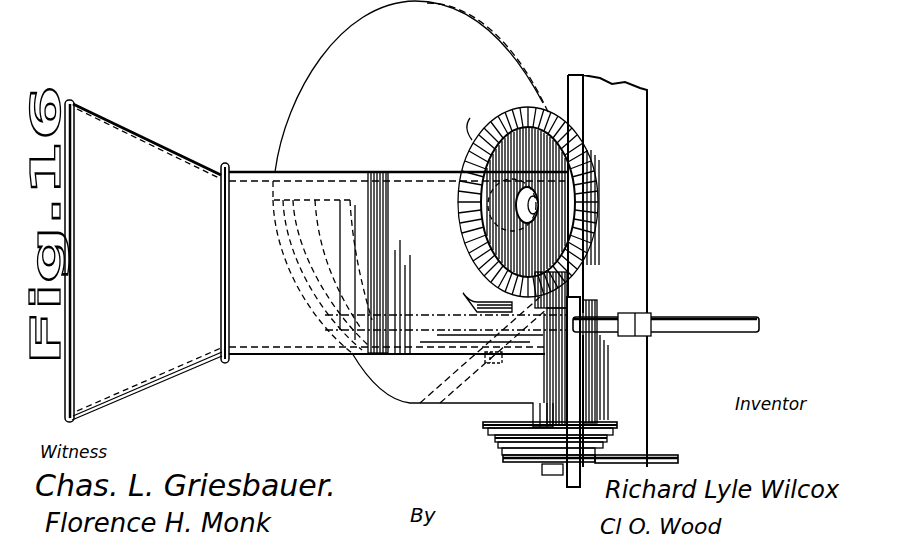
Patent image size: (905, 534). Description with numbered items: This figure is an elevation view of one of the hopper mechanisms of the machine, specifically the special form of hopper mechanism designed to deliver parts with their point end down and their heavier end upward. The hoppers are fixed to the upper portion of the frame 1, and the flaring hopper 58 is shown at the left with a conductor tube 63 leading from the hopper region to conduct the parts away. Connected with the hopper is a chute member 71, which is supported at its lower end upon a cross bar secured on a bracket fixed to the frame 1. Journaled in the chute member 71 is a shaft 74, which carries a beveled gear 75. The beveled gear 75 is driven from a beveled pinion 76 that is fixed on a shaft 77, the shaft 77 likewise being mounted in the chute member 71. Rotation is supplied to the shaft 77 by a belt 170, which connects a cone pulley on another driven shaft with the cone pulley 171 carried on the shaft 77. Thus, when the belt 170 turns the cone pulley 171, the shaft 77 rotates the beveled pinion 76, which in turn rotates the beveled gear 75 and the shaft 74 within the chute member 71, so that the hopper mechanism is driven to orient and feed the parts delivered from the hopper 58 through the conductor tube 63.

The frame 1 is at (648, 198).
The hopper 58 is at (170, 157).
The conductor tube 63 is at (712, 317).
The chute member 71 is at (383, 172).
The shaft 74 is at (470, 152).
The beveled gear 75 is at (517, 108).
The beveled pinion 76 is at (573, 286).
The shaft 77 is at (553, 475).
The belt 170 is at (670, 462).
The cone pulley 171 is at (617, 428).